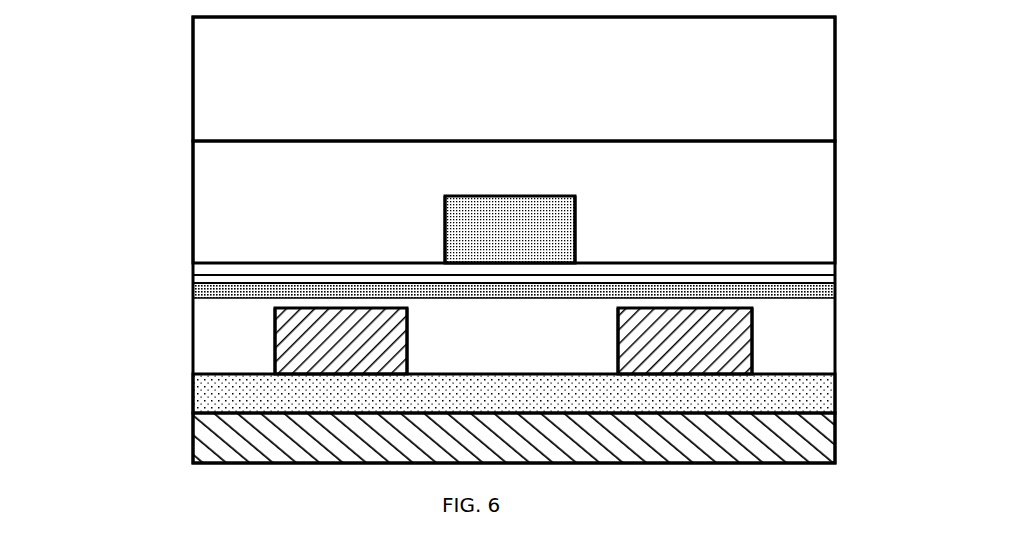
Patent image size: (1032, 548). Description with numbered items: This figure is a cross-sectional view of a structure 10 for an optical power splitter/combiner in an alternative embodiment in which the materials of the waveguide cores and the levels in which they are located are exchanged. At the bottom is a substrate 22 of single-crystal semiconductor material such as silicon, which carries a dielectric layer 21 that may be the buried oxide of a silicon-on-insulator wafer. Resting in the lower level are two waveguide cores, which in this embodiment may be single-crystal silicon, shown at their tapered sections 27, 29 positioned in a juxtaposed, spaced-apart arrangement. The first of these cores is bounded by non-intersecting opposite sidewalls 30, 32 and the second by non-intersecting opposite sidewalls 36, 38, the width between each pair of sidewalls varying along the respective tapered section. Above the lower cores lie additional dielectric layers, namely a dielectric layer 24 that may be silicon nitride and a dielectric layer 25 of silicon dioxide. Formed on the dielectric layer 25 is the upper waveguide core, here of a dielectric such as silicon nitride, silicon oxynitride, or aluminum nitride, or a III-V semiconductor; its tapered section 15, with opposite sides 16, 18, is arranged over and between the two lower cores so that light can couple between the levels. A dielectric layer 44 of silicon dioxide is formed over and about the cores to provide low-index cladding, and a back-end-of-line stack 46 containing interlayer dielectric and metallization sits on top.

The structure 10 is at (128, 170).
The back-end-of-line stack 46 is at (235, 73).
The dielectric layer 44 is at (790, 163).
The tapered section 15 is at (513, 217).
The first side of die 16 is at (445, 231).
The second side of die 18 is at (575, 247).
The dielectric layer 25 is at (215, 276).
The dielectric layer 24 is at (820, 291).
The tapered section 27 is at (330, 328).
The sidewall 30 is at (275, 353).
The sidewall 32 is at (407, 355).
The tapered section 29 is at (710, 333).
The sidewall 36 is at (618, 336).
The sidewall 38 is at (752, 366).
The dielectric layer 21 is at (222, 400).
The substrate 22 is at (222, 450).